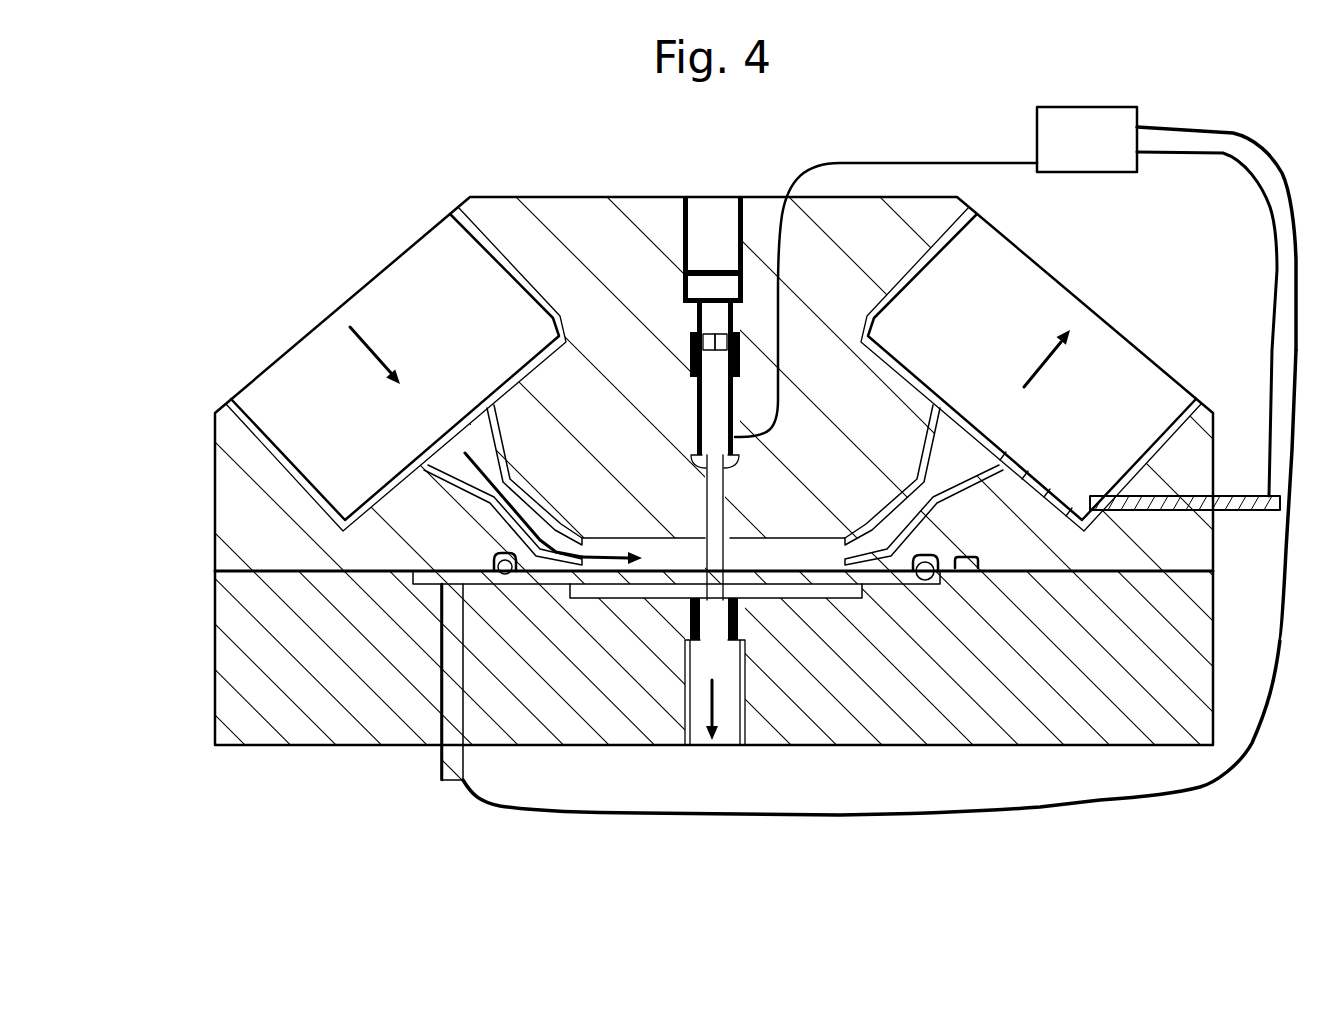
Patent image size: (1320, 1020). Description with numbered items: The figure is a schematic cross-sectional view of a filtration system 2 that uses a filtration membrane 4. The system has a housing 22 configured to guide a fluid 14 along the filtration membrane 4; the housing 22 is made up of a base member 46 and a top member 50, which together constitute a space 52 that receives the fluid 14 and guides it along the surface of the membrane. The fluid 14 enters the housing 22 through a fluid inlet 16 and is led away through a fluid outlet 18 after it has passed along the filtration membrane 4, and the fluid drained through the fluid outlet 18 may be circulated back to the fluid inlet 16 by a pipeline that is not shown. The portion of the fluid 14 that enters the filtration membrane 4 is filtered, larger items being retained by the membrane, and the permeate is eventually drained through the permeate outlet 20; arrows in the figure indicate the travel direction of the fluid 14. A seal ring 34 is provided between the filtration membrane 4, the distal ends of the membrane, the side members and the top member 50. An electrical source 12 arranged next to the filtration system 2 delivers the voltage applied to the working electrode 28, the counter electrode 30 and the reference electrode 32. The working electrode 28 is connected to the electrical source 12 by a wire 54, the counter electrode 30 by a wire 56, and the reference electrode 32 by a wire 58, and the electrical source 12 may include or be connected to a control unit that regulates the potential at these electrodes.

The filtration system 2 is at (288, 252).
The filtration membrane 4 is at (637, 578).
The electrical source 12 is at (1047, 124).
The fluid 14 is at (455, 460).
The fluid inlet 16 is at (312, 392).
The fluid outlet 18 is at (1104, 409).
The permeate outlet 20 is at (728, 727).
The housing 22 is at (657, 183).
The working electrode 28 is at (447, 758).
The counter electrode 30 is at (1238, 494).
The reference electrode 32 is at (730, 375).
The seal ring 34 is at (500, 583).
The base member 46 is at (233, 716).
The top member 50 is at (600, 210).
The space 52 is at (367, 428).
The wire 54 is at (1267, 687).
The wire 56 is at (1247, 186).
The wire 58 is at (823, 162).